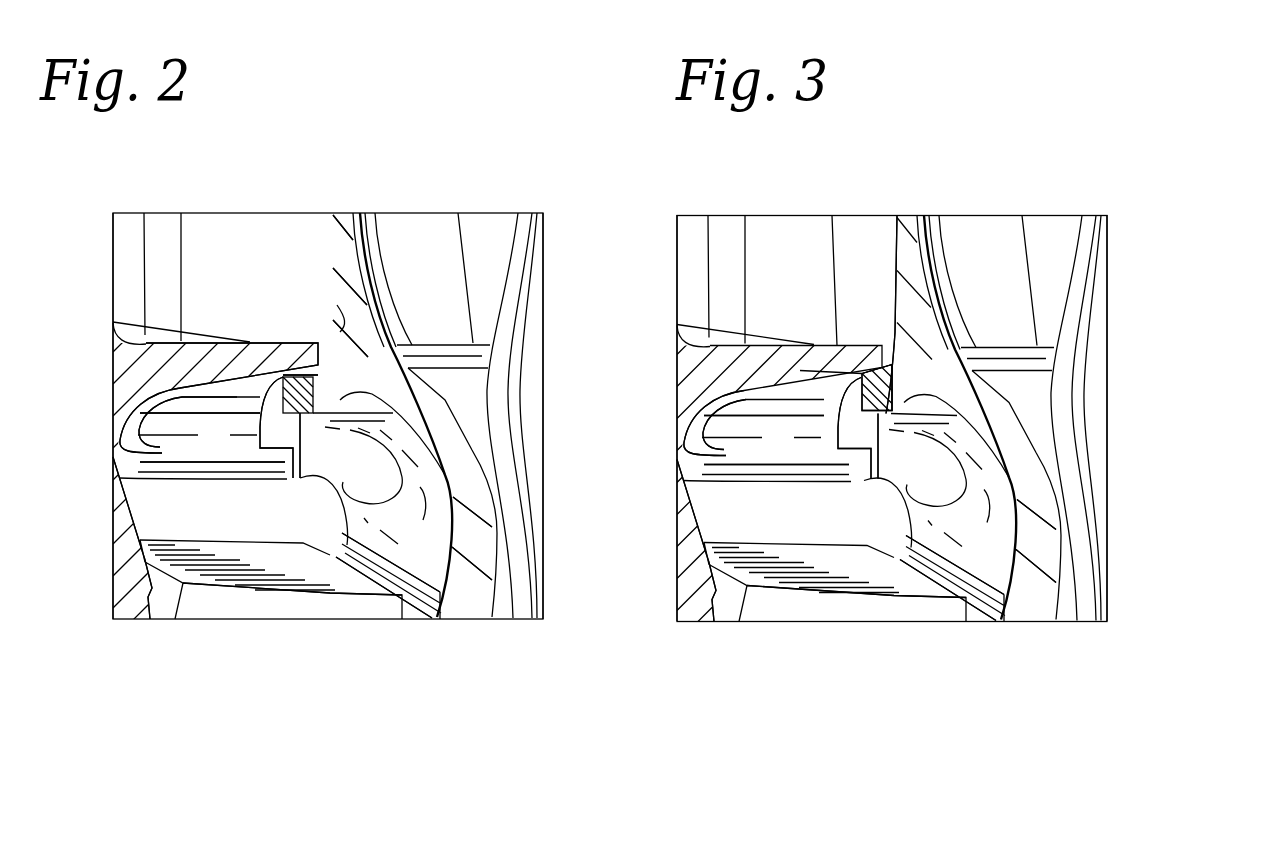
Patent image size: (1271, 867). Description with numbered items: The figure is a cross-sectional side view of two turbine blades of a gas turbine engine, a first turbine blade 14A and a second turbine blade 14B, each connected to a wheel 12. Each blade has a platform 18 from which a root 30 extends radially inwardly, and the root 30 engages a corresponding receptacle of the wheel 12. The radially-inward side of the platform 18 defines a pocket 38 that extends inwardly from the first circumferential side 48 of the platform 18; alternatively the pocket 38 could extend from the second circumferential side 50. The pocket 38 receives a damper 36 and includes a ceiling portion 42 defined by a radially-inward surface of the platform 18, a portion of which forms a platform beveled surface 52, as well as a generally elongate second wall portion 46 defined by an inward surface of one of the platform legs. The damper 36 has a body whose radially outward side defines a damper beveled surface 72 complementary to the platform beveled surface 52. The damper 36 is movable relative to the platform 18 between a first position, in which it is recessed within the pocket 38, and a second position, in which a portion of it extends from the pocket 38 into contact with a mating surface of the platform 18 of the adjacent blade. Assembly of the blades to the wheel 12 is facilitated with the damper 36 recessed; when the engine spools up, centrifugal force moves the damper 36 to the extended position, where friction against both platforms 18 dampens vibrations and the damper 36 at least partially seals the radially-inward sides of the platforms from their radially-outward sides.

In FIG. 2, the wheel 12 is at (363, 603).
In FIG. 3, the wheel 12 is at (927, 605).
In FIG. 2, the first turbine blade 14A is at (97, 499).
In FIG. 3, the first turbine blade 14A is at (670, 379).
In FIG. 2, the second turbine blade 14B is at (553, 498).
In FIG. 3, the second turbine blade 14B is at (1113, 398).
In FIG. 2, the platform 18 is at (146, 362).
In FIG. 2, the root 30 is at (123, 593).
In FIG. 3, the root 30 is at (687, 597).
In FIG. 2, the damper 36 is at (282, 437).
In FIG. 3, the damper 36 is at (846, 439).
In FIG. 2, the pocket 38 is at (183, 418).
In FIG. 3, the pocket 38 is at (737, 425).
In FIG. 2, the ceiling portion 42 is at (217, 392).
In FIG. 2, the second wall portion 46 is at (224, 443).
In FIG. 3, the second wall portion 46 is at (788, 443).
In FIG. 3, the first circumferential side 48 is at (860, 318).
In FIG. 3, the second circumferential side 50 is at (891, 357).
In FIG. 2, the platform beveled surface 52 is at (325, 366).
In FIG. 3, the platform beveled surface 52 is at (855, 371).
In FIG. 2, the damper beveled surface 72 is at (290, 364).
In FIG. 3, the damper beveled surface 72 is at (885, 309).